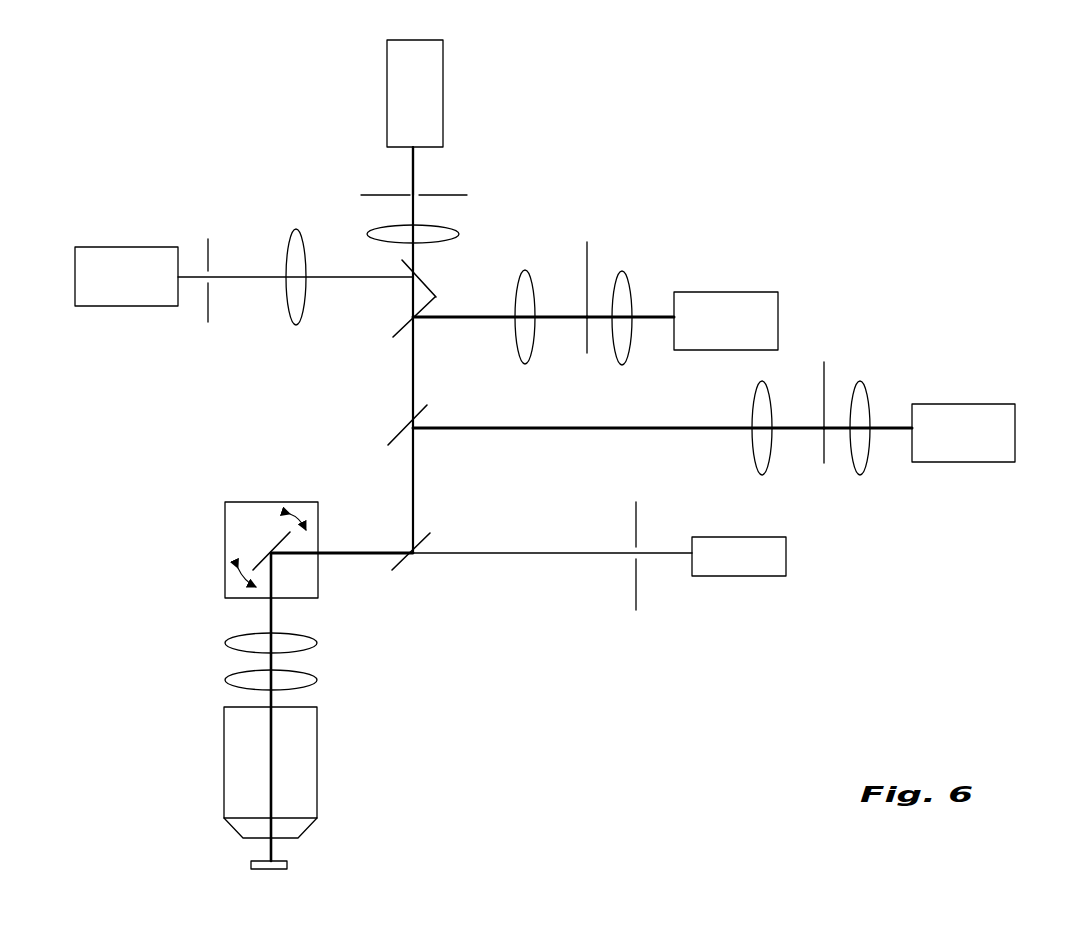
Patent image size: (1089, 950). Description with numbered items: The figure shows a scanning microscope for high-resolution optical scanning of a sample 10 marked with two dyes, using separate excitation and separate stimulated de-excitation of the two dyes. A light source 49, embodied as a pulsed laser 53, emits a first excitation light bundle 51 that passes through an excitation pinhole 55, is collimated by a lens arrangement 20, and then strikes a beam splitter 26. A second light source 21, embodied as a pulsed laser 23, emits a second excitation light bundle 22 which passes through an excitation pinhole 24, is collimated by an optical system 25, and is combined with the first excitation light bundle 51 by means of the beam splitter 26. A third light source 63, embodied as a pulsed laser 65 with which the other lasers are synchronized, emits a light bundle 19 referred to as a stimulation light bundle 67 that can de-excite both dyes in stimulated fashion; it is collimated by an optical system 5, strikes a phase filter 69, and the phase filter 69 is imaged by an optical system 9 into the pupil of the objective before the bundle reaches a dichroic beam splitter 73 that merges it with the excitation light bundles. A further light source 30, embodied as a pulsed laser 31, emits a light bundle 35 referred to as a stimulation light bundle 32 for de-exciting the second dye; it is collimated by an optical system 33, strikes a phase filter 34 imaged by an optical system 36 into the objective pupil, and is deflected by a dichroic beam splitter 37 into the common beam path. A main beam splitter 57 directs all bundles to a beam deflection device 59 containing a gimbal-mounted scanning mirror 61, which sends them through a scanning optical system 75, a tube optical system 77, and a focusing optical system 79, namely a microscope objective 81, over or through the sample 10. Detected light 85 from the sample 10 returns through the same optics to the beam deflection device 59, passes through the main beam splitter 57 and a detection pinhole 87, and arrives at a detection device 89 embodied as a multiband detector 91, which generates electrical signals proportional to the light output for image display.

The optical system 5 is at (616, 252).
The optical system 9 is at (527, 272).
The sample 10 is at (284, 861).
The light bundle 19 is at (551, 322).
The lens arrangement 20 is at (443, 224).
The second light source 21 is at (112, 247).
The second excitation light bundle 22 is at (236, 277).
The pulsed laser 23 is at (91, 324).
The excitation pinhole 24 is at (205, 232).
The optical system 25 is at (292, 318).
The beam splitter 26 is at (418, 270).
The third light source 30 is at (1026, 388).
The pulsed laser 31 is at (977, 415).
The stimulation light bundle 32 is at (888, 428).
The optical system 33 is at (860, 378).
The phase filter 34 is at (826, 365).
The light bundle 35 is at (789, 434).
The optical system 36 is at (745, 405).
The dichroic beam splitter 37 is at (400, 437).
The light source 49 is at (364, 88).
The first excitation light bundle 51 is at (411, 170).
The pulsed laser 53 is at (423, 102).
The excitation pinhole 55 is at (398, 197).
The main beam splitter 57 is at (400, 567).
The beam deflection device 59 is at (244, 512).
The scanning mirror 61 is at (262, 558).
The third light source 63 is at (789, 275).
The pulsed laser 65 is at (740, 303).
The stimulation light bundle 67 is at (650, 317).
The phase filter 69 is at (590, 245).
The dichroic beam splitter 73 is at (400, 325).
The scanning optical system 75 is at (240, 643).
The tube optical system 77 is at (240, 680).
The focusing optical system 79 is at (319, 793).
The microscope objective 81 is at (298, 725).
The detected light 85 is at (530, 555).
The detection pinhole 87 is at (637, 592).
The detection device 89 is at (790, 555).
The multiband detector 91 is at (728, 545).